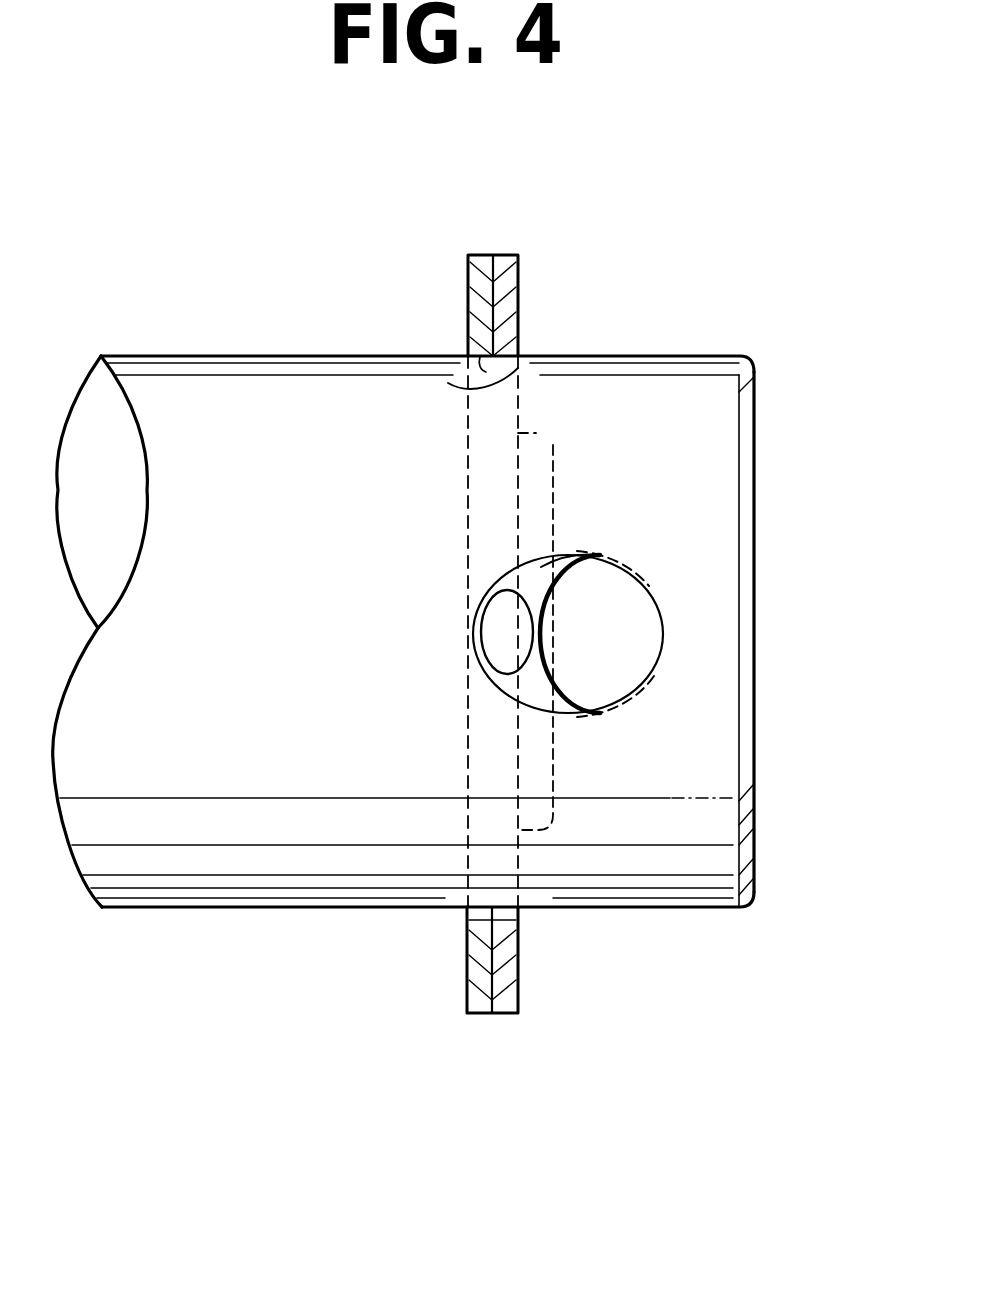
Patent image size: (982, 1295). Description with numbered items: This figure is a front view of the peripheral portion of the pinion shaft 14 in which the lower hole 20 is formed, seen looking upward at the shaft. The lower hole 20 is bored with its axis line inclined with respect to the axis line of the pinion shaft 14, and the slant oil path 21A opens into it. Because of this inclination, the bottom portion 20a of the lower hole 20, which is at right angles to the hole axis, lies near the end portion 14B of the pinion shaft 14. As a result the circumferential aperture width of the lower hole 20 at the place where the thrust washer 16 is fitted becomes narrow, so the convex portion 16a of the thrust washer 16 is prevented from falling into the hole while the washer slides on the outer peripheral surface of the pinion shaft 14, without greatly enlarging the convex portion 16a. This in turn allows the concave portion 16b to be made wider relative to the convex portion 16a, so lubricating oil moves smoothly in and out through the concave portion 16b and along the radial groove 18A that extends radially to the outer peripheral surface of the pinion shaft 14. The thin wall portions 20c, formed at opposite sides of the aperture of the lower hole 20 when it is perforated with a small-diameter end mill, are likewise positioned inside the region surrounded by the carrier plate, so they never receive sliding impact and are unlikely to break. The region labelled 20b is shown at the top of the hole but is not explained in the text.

The pinion shaft 14 is at (212, 915).
The end portion of the pinion shaft 14B is at (730, 471).
The thrust washer 16 is at (508, 255).
The convex portion 16a is at (468, 371).
The concave portion 16b is at (508, 907).
The radial groove 18A is at (551, 477).
The lower hole 20 is at (624, 667).
The bottom portion 20a is at (636, 626).
The ball top portion 20b is at (541, 567).
The thin wall portions 20c is at (632, 559).
The slant oil path 21A is at (486, 636).